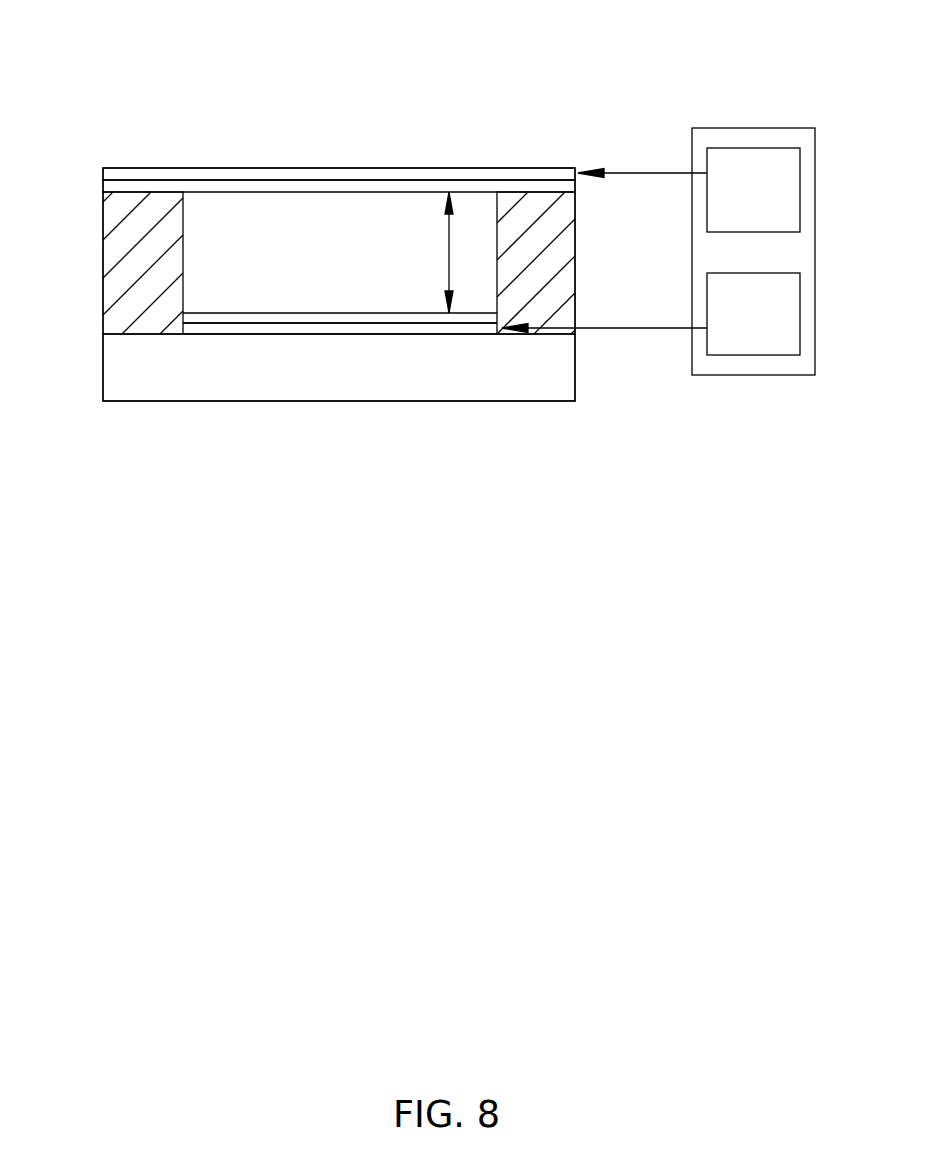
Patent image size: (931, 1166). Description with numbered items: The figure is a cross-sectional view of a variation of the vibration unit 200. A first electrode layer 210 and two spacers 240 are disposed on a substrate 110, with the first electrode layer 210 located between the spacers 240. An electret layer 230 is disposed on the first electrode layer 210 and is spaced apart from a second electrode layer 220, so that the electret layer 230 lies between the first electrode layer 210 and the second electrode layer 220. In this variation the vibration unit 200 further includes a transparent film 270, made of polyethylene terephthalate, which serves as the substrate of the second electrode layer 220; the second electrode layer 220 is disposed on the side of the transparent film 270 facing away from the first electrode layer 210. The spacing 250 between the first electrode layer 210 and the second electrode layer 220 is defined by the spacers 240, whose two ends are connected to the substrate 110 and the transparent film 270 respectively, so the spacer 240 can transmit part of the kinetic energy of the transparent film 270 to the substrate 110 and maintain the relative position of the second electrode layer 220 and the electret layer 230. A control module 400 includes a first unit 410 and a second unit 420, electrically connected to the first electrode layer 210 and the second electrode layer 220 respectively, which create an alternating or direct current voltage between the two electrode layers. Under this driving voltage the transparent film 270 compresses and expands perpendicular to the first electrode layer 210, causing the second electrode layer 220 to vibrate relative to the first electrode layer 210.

The vibration unit 200 is at (162, 28).
The substrate 110 is at (267, 384).
The first electrode layer 210 is at (207, 329).
The second electrode layer 220 is at (123, 175).
The electret layer 230 is at (207, 318).
The spacer 240 is at (117, 272).
The spacing 250 is at (430, 252).
The transparent film 270 is at (123, 187).
The control module 400 is at (731, 128).
The first unit 410 is at (771, 326).
The second unit 420 is at (771, 204).